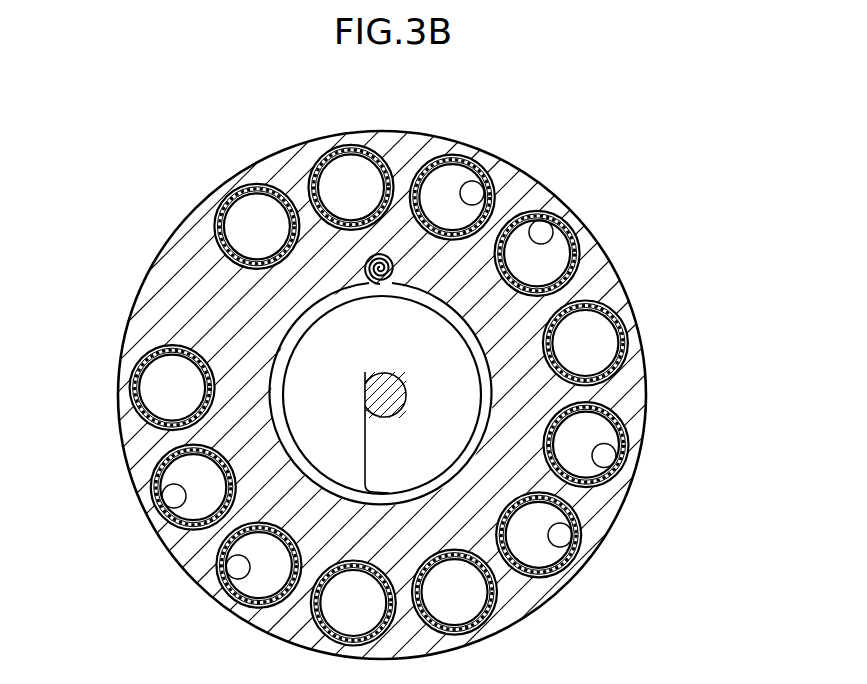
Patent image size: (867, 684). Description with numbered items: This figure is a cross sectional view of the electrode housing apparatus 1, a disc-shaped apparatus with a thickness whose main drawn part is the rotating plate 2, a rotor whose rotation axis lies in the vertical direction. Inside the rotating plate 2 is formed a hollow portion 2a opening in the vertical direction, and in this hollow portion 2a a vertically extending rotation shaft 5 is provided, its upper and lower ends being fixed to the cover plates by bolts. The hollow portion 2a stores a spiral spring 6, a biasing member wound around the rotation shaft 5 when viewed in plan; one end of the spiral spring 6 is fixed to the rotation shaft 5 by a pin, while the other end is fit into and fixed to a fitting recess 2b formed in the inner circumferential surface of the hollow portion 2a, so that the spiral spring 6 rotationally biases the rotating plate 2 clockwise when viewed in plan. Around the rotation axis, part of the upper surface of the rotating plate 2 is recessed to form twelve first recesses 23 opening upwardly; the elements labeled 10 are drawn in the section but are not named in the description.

The electrode housing apparatus 1 is at (664, 166).
The rotating plate 2 is at (606, 259).
The hollow portion 2a is at (283, 346).
The fitting recess 2b is at (388, 254).
The rotation shaft 5 is at (393, 369).
The spiral spring 6 is at (366, 450).
The optical fiber ferrule / tube 10 is at (257, 184).
The first recesses 23 is at (541, 221).